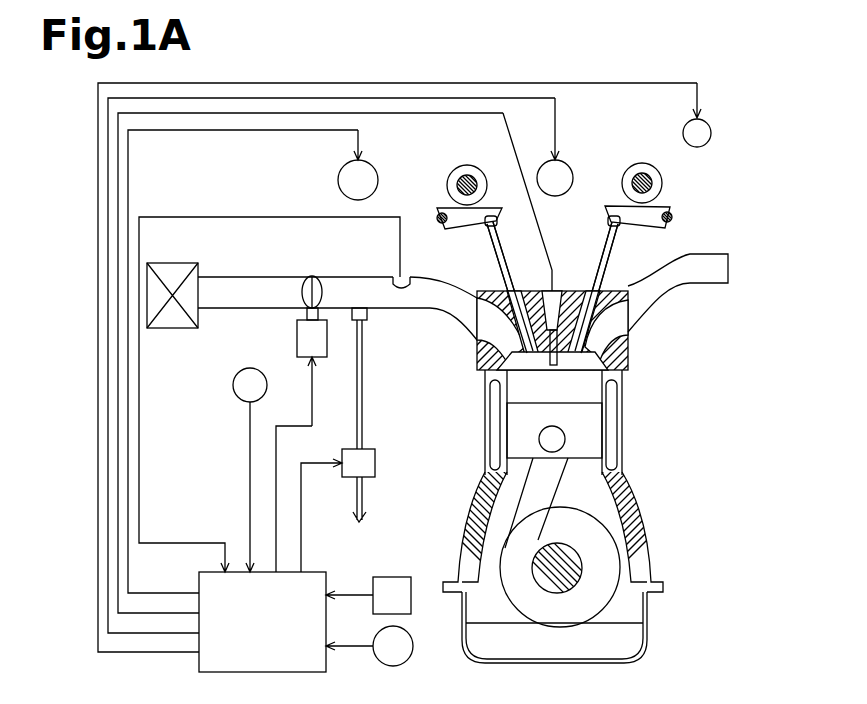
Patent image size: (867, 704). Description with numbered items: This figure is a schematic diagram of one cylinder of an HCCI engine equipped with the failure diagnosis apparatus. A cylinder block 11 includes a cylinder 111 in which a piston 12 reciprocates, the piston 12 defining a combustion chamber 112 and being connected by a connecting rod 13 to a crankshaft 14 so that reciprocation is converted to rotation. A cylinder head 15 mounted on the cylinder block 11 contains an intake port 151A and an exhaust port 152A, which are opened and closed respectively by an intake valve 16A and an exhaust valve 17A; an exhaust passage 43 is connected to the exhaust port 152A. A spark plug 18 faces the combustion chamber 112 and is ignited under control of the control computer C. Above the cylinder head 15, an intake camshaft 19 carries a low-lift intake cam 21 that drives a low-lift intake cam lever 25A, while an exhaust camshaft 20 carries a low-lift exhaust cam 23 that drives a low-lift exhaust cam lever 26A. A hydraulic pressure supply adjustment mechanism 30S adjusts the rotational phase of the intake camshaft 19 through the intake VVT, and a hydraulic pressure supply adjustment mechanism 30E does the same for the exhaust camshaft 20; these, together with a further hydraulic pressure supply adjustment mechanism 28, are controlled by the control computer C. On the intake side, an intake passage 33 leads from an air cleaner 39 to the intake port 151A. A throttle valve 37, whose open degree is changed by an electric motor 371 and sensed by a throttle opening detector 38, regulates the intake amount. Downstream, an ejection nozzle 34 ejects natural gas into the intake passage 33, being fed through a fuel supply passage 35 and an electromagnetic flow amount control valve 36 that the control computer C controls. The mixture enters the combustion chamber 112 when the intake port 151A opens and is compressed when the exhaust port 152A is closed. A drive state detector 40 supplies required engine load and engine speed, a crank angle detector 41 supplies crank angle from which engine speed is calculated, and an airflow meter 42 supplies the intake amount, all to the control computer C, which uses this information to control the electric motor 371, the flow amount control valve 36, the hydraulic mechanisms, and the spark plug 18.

The cylinder block 11 is at (650, 540).
The cylinder 111 is at (622, 428).
The combustion chamber 112 is at (585, 386).
The piston 12 is at (520, 456).
The connecting rod 13 is at (545, 497).
The crankshaft 14 is at (535, 590).
The cylinder head 15 is at (500, 370).
The intake port 151A is at (483, 345).
The exhaust port 152A is at (620, 347).
The intake valve 16A is at (488, 396).
The exhaust valve 17A is at (590, 333).
The spark plug 18 is at (552, 372).
The intake camshaft 19 is at (458, 172).
The exhaust camshaft 20 is at (662, 173).
The low-lift intake cam 21 is at (486, 176).
The low-lift exhaust cam 23 is at (622, 176).
The low-lift intake cam lever 25A is at (437, 212).
The low-lift exhaust cam lever 26A is at (665, 205).
The hydraulic pressure supply adjustment mechanism 28 is at (711, 133).
The hydraulic pressure supply adjustment mechanism 30S is at (338, 180).
The hydraulic pressure supply adjustment mechanism 30E is at (555, 196).
The intake passage 33 is at (353, 283).
The ejection nozzle 34 is at (368, 320).
The fuel supply passage 35 is at (368, 430).
The electromagnetic flow amount control valve 36 is at (376, 463).
The throttle valve 37 is at (307, 276).
The electric motor 371 is at (297, 336).
The throttle opening detector 38 is at (233, 385).
The air cleaner 39 is at (168, 265).
The drive state detector 40 is at (393, 583).
The crank angle detector 41 is at (404, 658).
The airflow meter 42 is at (417, 278).
The exhaust passage 43 is at (728, 268).
The control computer C is at (262, 672).